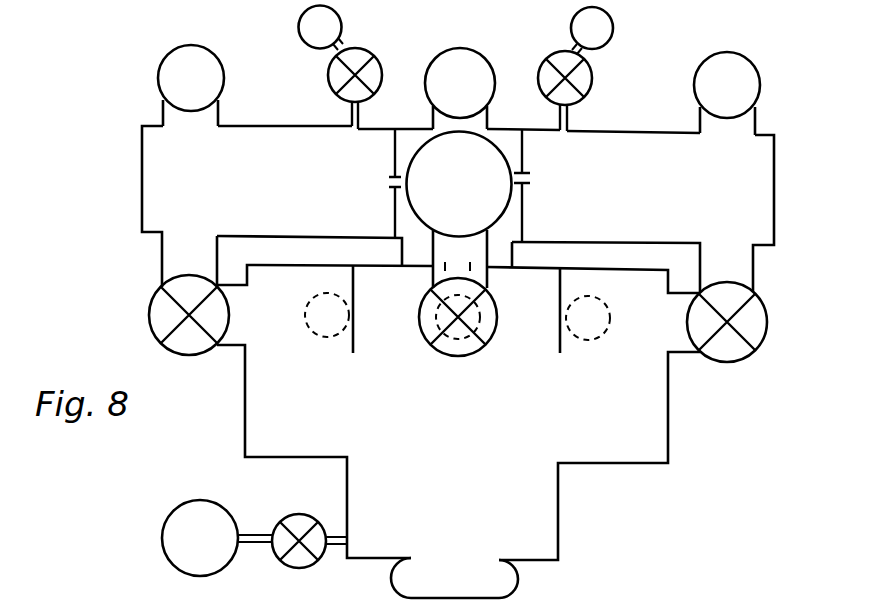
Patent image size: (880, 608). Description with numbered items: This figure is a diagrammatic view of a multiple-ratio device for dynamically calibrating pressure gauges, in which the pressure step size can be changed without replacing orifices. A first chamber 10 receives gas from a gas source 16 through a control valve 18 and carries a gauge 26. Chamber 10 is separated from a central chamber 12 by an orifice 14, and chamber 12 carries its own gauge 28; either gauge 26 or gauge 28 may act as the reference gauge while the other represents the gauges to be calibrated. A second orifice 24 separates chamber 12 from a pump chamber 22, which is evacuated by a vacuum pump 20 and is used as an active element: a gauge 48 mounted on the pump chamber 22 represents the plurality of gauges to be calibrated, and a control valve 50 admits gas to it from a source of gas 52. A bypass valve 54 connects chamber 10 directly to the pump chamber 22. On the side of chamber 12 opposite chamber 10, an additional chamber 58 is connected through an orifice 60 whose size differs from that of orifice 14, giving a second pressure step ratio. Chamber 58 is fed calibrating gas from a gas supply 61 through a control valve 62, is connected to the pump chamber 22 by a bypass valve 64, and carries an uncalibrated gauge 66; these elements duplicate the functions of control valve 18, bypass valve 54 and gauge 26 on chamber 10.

The chamber 10 is at (263, 132).
The chamber 12 is at (497, 141).
The orifice 14 is at (393, 174).
The gas source 16 is at (343, 27).
The control valve 18 is at (375, 58).
The vacuum pump 20 is at (520, 587).
The pump chamber 22 is at (617, 268).
The orifice 24 is at (458, 293).
The gauge 26 is at (225, 60).
The gauge 28 is at (483, 62).
The gauge 48 is at (325, 340).
The control valve 50 is at (305, 498).
The source of gas 52 is at (178, 508).
The bypass valve 54 is at (160, 337).
The additional chamber 58 is at (617, 152).
The orifice 60 is at (530, 177).
The gas source 61 is at (613, 32).
The control valve 62 is at (593, 74).
The bypass valve 64 is at (740, 358).
The uncalibrated gauge 66 is at (760, 75).